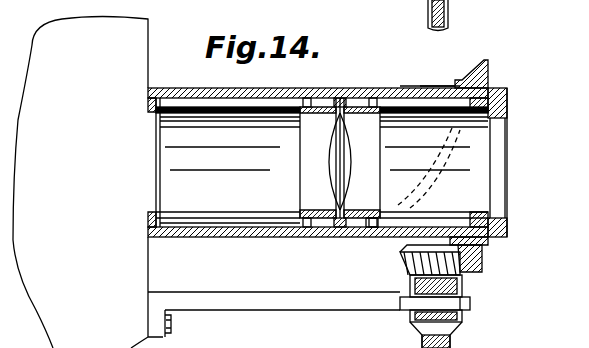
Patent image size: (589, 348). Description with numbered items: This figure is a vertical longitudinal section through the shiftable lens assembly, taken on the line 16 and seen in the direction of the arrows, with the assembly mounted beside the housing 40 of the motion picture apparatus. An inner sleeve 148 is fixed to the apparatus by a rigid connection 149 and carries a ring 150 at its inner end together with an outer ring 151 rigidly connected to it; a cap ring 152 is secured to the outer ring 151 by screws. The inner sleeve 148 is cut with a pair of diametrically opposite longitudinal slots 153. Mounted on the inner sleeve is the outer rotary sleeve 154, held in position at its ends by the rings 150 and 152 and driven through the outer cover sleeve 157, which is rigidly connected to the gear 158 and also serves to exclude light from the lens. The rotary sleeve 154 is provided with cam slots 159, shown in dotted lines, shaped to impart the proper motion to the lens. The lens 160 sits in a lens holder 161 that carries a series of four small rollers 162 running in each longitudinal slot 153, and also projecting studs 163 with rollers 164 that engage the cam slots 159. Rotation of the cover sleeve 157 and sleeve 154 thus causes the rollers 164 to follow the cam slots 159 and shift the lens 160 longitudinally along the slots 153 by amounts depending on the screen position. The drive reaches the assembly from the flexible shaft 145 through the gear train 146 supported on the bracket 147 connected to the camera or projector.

The housing 40 is at (55, 14).
The section line 16- 16 is at (339, 81).
The flexible shaft 145 is at (447, 311).
The gear train 146 is at (482, 272).
The bracket 147 is at (273, 299).
The inner sleeve 148 is at (483, 130).
The rigid connection 149 is at (146, 113).
The ring 150 is at (149, 218).
The outer ring 151 is at (500, 247).
The cap ring 152 is at (497, 236).
The longitudinal slots 153 is at (249, 220).
The outer rotary sleeve 154 is at (410, 89).
The outer cover sleeve 157 is at (440, 86).
The gear 158 is at (478, 64).
The cam slots 159 is at (435, 190).
The lens 160 is at (352, 166).
The lens holder 161 is at (300, 142).
The small rollers 162 is at (372, 228).
The projecting studs 163 is at (342, 97).
The rollers 164 is at (336, 228).